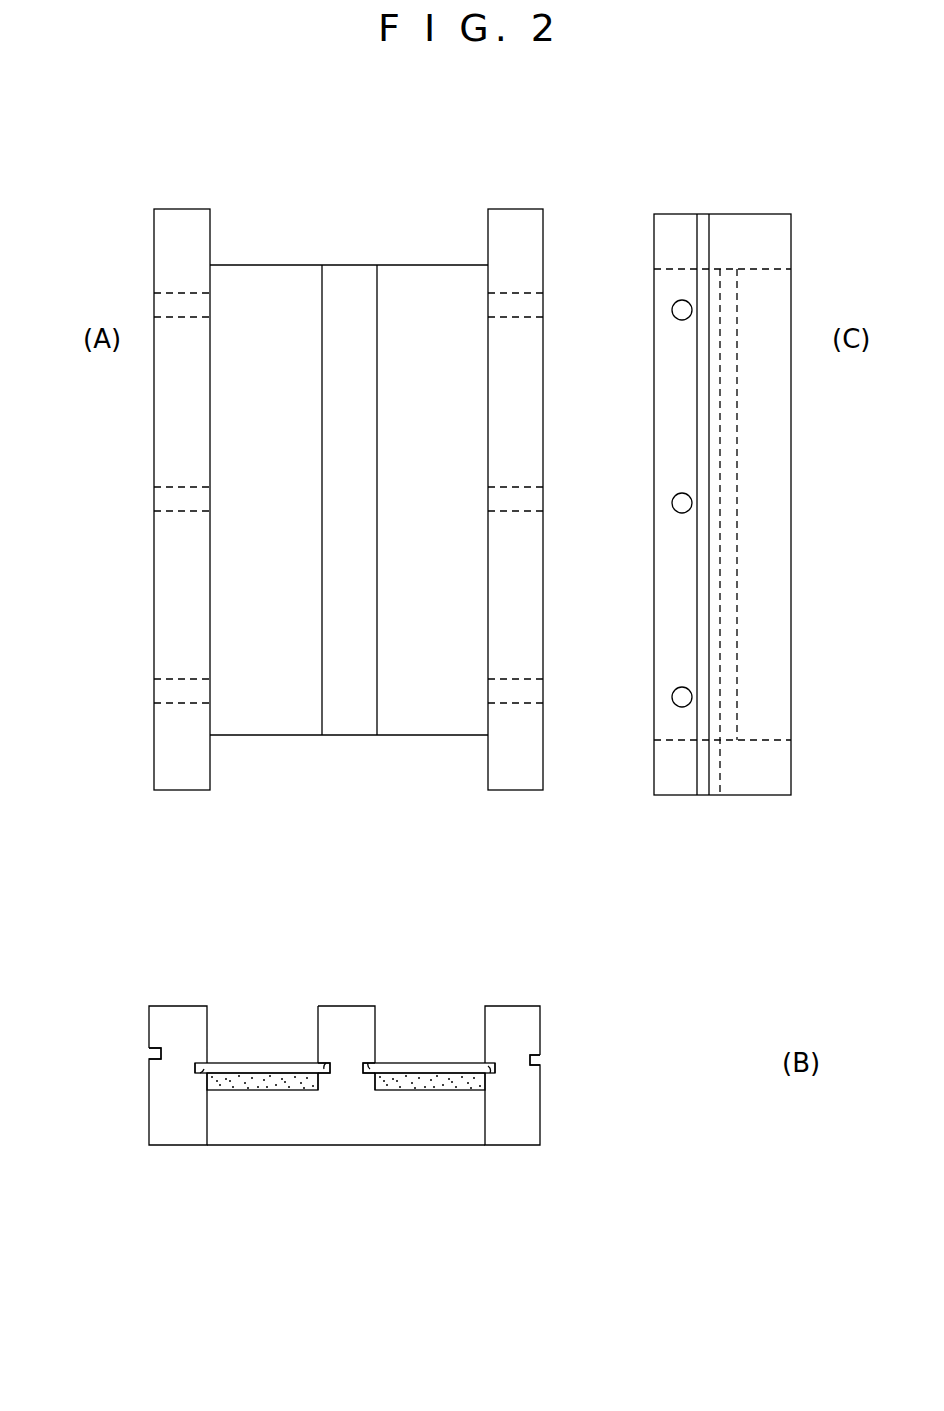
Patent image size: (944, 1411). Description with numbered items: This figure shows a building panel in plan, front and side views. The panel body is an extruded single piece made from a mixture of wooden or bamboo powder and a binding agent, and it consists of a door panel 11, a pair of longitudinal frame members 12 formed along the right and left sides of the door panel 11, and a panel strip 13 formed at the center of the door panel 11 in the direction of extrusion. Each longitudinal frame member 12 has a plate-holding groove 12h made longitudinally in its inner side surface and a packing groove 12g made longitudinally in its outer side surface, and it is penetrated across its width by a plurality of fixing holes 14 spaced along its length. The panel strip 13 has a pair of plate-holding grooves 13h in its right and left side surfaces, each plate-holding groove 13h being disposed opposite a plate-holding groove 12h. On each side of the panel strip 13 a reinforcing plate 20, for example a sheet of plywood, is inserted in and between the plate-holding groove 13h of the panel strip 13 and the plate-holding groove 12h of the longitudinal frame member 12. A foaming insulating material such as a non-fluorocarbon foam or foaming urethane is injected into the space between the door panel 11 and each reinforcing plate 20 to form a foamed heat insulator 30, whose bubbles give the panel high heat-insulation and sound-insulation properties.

The door panel 11 is at (351, 1127).
The longitudinal frame member 12 is at (185, 232).
The packing groove 12g is at (700, 775).
The plate-holding groove 12h is at (197, 1075).
The panel strip 13 is at (349, 297).
The plate-holding groove 13h is at (303, 1090).
The fixing hole 14 is at (674, 314).
The reinforcing plate 20 is at (265, 708).
The foamed heat insulator 30 is at (232, 1090).